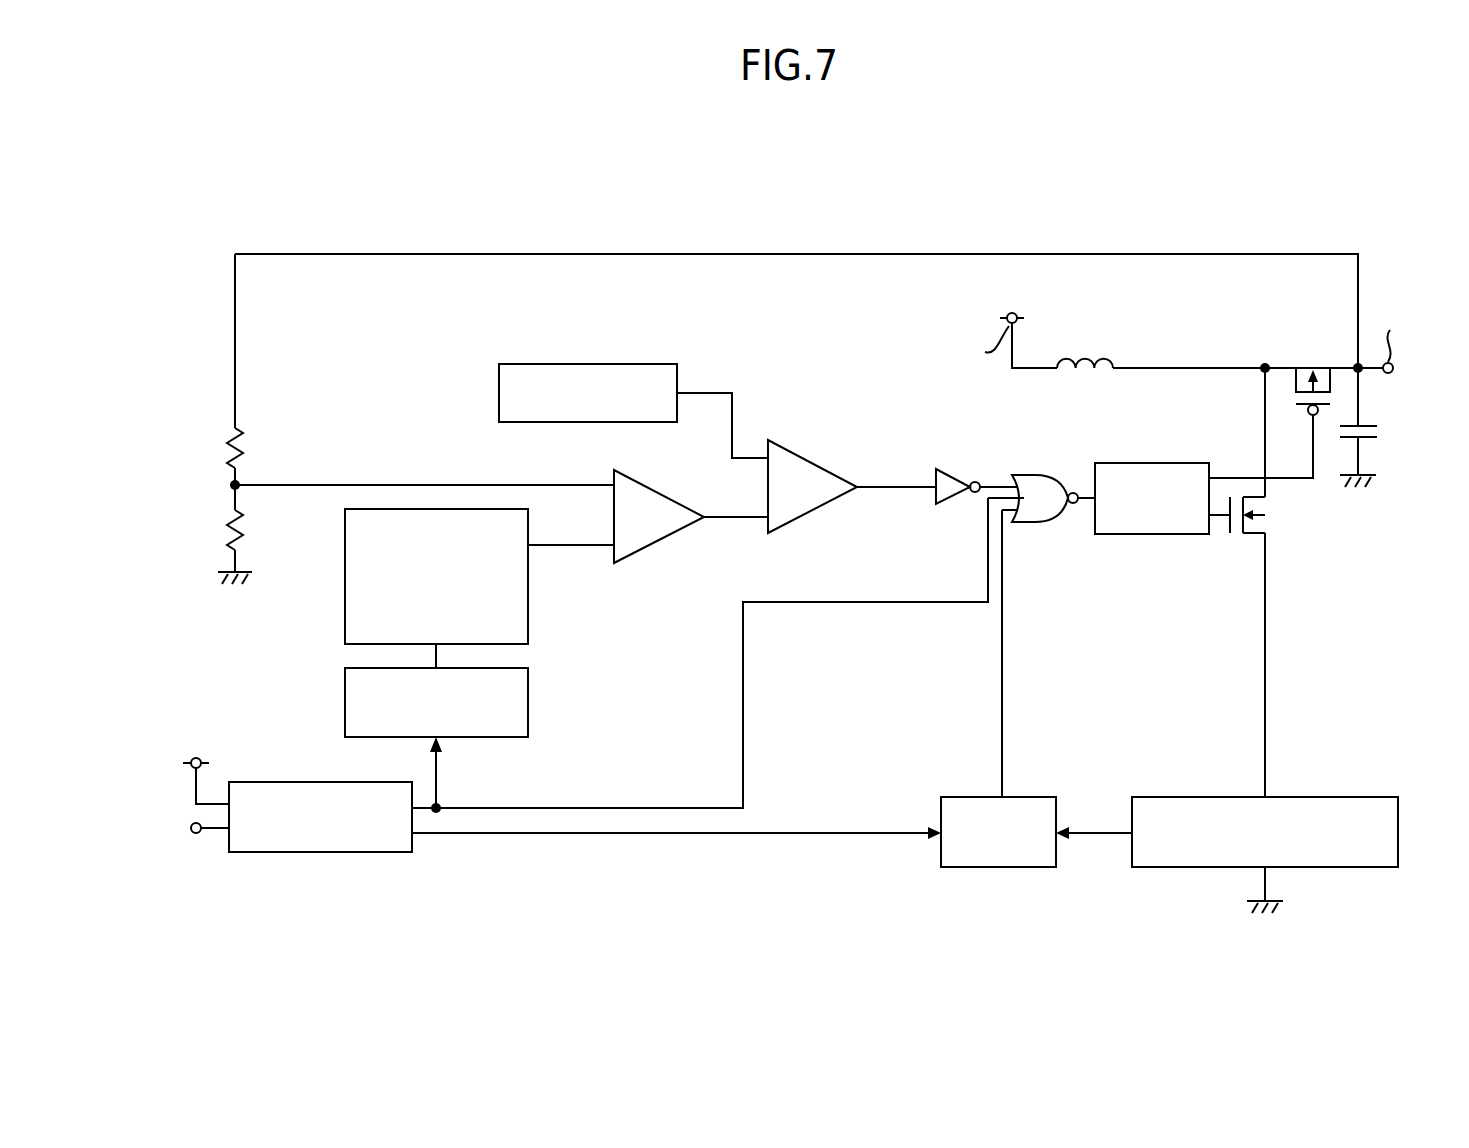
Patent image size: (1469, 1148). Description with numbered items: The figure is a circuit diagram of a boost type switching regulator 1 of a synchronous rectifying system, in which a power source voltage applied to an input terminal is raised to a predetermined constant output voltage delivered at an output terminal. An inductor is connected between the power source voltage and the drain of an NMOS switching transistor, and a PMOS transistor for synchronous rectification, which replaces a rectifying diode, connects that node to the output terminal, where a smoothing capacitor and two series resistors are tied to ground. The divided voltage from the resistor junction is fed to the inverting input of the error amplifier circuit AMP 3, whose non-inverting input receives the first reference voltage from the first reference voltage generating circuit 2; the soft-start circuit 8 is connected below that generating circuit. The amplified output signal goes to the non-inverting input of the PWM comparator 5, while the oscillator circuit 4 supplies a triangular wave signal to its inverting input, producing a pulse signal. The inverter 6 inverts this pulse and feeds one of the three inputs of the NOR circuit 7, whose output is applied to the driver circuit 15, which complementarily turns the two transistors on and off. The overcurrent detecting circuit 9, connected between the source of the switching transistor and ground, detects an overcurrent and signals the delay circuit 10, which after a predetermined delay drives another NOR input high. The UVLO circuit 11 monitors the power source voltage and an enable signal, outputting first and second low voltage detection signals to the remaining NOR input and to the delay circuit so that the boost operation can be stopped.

The switching regulator 1 is at (1154, 206).
The first reference voltage generating circuit 2 is at (345, 577).
The error amplifier circuit AMP 3 is at (662, 494).
The oscillator circuit 4 is at (588, 364).
The PWM comparator 5 is at (815, 464).
The inverter 6 is at (950, 475).
The NOR circuit 7 is at (1035, 475).
The soft-start circuit 8 is at (345, 705).
The overcurrent detecting circuit 9 is at (1312, 797).
The delay circuit 10 is at (967, 797).
The UVLO circuit 11 is at (322, 852).
The driver circuit 15 is at (1152, 463).